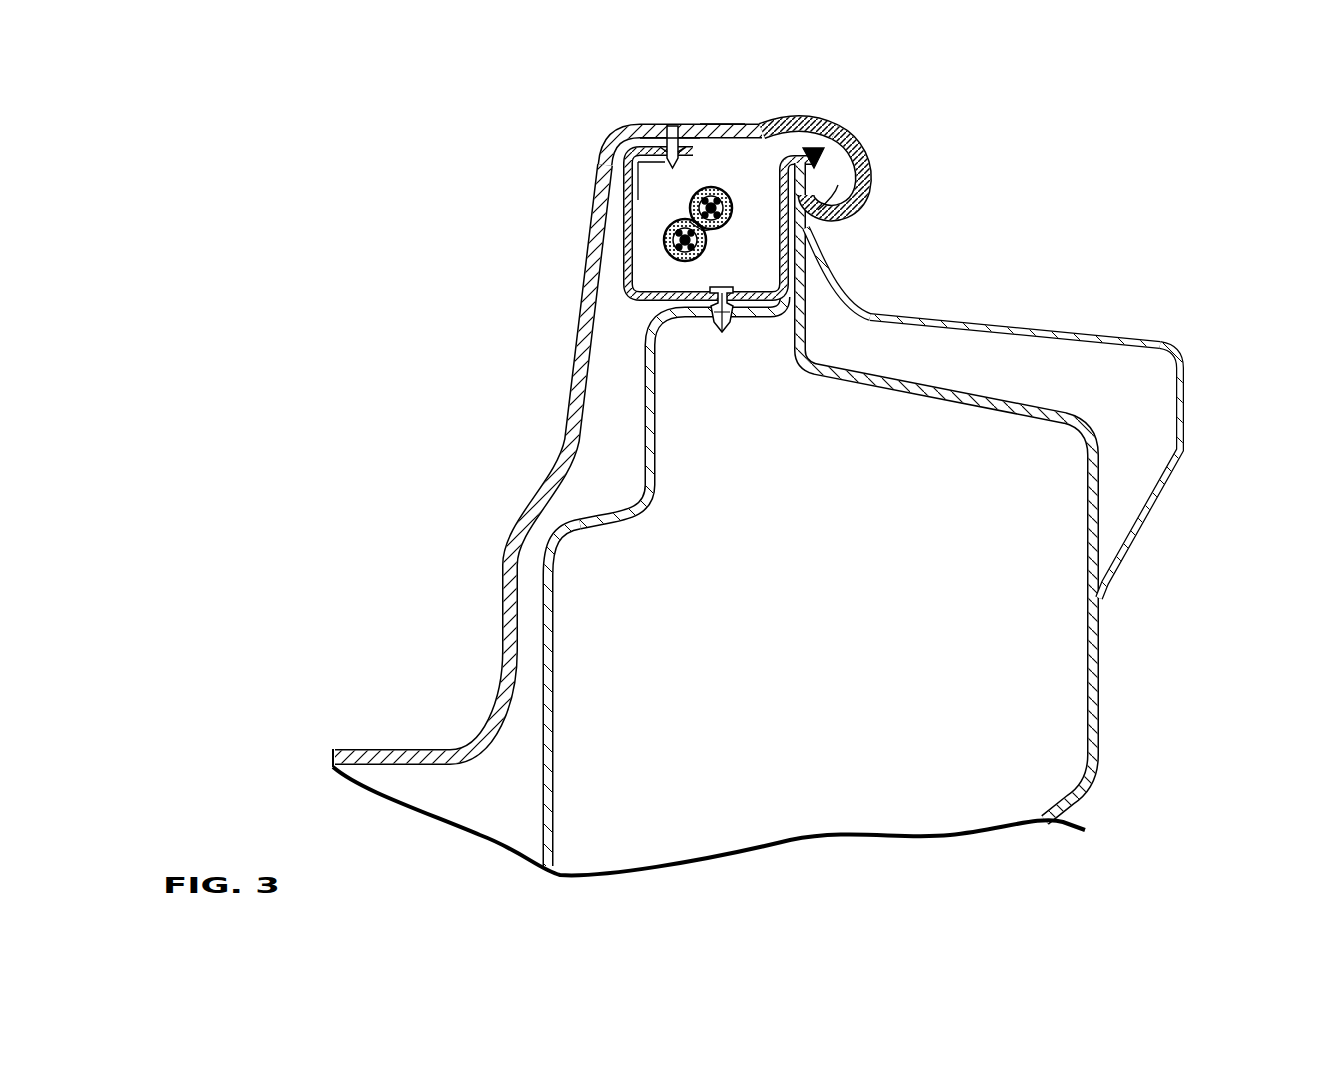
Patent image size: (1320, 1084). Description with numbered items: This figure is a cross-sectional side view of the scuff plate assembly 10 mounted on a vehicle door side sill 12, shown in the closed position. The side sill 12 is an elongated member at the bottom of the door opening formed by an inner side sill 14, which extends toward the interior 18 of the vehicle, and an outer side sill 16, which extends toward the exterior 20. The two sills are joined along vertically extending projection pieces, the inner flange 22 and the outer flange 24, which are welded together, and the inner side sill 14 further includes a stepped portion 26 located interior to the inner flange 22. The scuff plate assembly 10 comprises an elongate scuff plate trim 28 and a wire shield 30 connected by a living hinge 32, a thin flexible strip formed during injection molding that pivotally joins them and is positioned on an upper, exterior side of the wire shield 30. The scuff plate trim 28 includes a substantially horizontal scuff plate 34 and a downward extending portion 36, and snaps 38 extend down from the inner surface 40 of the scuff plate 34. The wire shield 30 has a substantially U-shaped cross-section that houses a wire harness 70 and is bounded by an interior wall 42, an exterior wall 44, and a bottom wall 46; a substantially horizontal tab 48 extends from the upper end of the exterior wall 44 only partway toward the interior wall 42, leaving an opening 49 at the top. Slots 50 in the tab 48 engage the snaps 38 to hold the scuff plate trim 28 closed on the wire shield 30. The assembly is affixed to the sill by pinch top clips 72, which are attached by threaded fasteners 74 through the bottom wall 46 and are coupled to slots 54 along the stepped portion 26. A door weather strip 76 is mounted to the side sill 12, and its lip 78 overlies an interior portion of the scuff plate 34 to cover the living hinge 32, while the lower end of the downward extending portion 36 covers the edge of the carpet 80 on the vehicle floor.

The scuff plate assembly 10 is at (567, 347).
The vehicle door side sill 12 is at (559, 765).
The inner side sill 14 is at (543, 802).
The outer side sill 16 is at (1097, 705).
The interior 18 is at (276, 548).
The exterior 20 is at (1233, 585).
The inner flange 22 is at (818, 280).
The outer flange 24 is at (807, 258).
The stepped portion 26 is at (650, 330).
The scuff plate trim 28 is at (722, 116).
The wire shield 30 is at (620, 220).
The living hinge 32 is at (857, 152).
The scuff plate 34 is at (720, 122).
The downward extending portion 36 is at (550, 473).
The snaps 38 is at (633, 130).
The inner surface 40 is at (670, 126).
The interior wall 42 is at (807, 222).
The exterior wall 44 is at (617, 267).
The bottom wall 46 is at (640, 302).
The tab 48 is at (615, 152).
The opening 49 is at (738, 170).
The slots 50 is at (630, 157).
The slots 54 is at (648, 385).
The wire harness 70 is at (673, 213).
The pinch top clips 72 is at (800, 356).
The threaded fasteners 74 is at (937, 322).
The door weather strip 76 is at (873, 188).
The lip 78 is at (803, 125).
The carpet 80 is at (442, 760).